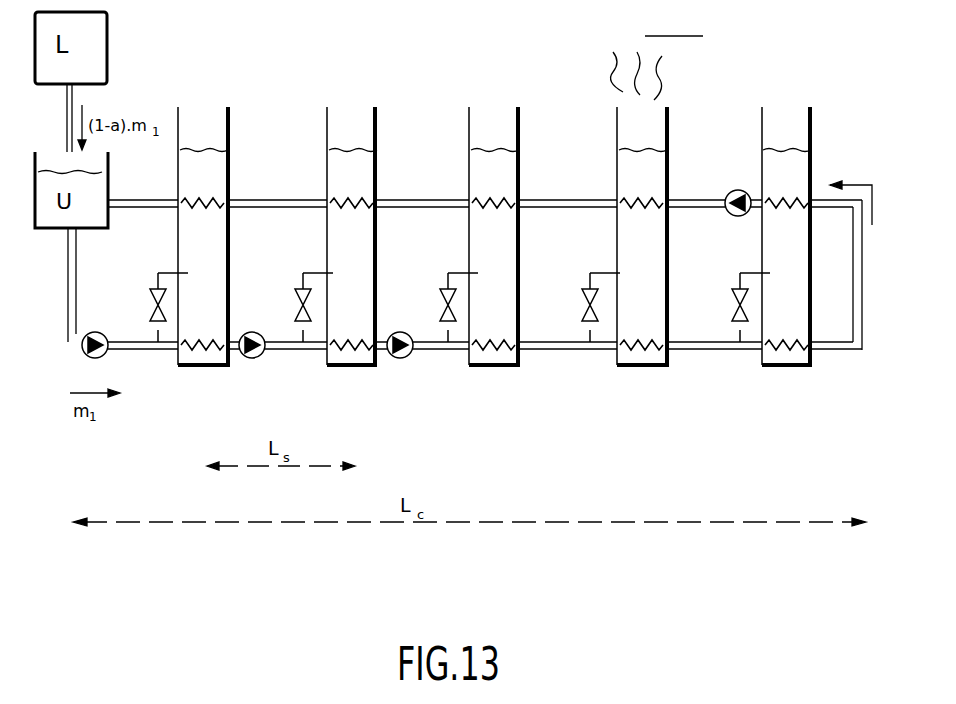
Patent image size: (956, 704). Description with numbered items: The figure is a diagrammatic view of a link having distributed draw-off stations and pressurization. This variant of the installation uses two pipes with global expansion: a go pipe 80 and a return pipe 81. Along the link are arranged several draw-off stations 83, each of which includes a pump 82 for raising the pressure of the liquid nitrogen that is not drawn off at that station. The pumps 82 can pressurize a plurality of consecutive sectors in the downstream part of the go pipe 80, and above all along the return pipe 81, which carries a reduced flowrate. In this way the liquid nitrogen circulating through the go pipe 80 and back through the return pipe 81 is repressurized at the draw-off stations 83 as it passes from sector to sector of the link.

The go pipe 80 is at (291, 352).
The return pipe 81 is at (437, 200).
The pump 82 is at (93, 332).
The draw-off station 83 is at (176, 381).